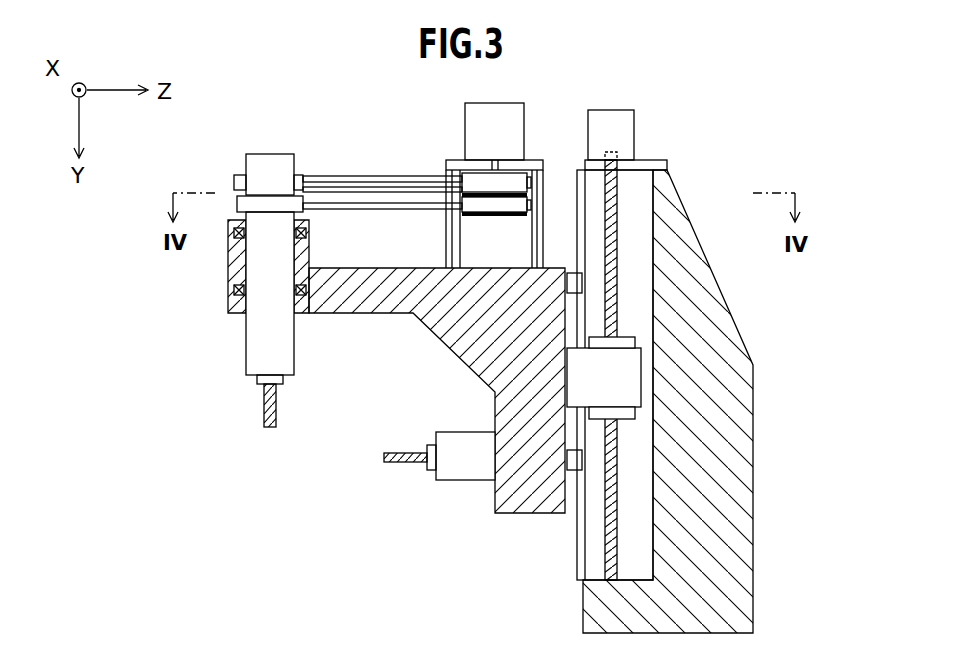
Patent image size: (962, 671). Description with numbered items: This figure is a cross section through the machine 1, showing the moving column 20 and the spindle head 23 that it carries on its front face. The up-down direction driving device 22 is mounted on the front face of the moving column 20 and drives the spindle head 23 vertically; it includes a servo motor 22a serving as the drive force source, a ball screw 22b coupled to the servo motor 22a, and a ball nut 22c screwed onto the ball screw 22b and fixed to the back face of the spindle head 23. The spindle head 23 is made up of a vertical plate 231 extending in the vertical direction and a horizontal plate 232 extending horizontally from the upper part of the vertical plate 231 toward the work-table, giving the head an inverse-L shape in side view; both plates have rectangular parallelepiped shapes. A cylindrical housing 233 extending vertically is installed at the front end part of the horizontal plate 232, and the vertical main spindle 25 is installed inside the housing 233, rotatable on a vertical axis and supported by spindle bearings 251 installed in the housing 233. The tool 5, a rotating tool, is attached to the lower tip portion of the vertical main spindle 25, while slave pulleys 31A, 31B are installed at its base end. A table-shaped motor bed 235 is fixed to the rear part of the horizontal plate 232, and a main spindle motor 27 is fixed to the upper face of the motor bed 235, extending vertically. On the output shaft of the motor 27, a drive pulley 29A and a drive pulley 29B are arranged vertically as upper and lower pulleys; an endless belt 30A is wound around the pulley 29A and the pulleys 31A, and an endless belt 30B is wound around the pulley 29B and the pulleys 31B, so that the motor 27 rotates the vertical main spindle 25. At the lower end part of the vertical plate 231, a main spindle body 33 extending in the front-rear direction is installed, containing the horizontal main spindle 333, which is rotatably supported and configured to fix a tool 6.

The machine tool 1 is at (790, 124).
The moving column 20 is at (778, 446).
The up-down direction driving device 22 is at (656, 155).
The servo motor 22a is at (634, 125).
The ball screw 22b is at (613, 230).
The ball nut 22c is at (625, 336).
The spindle head 23 is at (437, 390).
The vertical plate 231 is at (495, 415).
The horizontal plate 232 is at (362, 318).
The housing 233 is at (232, 280).
The motor bed 235 is at (458, 165).
The vertical main spindle 25 is at (246, 360).
The spindle bearing 251 is at (232, 230).
The main spindle motor 27 is at (524, 125).
The drive pulley 29A is at (470, 183).
The drive pulley 29B is at (475, 203).
The endless belt 30A is at (330, 176).
The endless belt 30B is at (345, 209).
The slave pulley 31A is at (240, 176).
The slave pulley 31B is at (272, 192).
The main spindle body 33 is at (471, 496).
The horizontal main spindle 333 is at (430, 470).
The tool 5 is at (264, 418).
The tool 6 is at (397, 465).